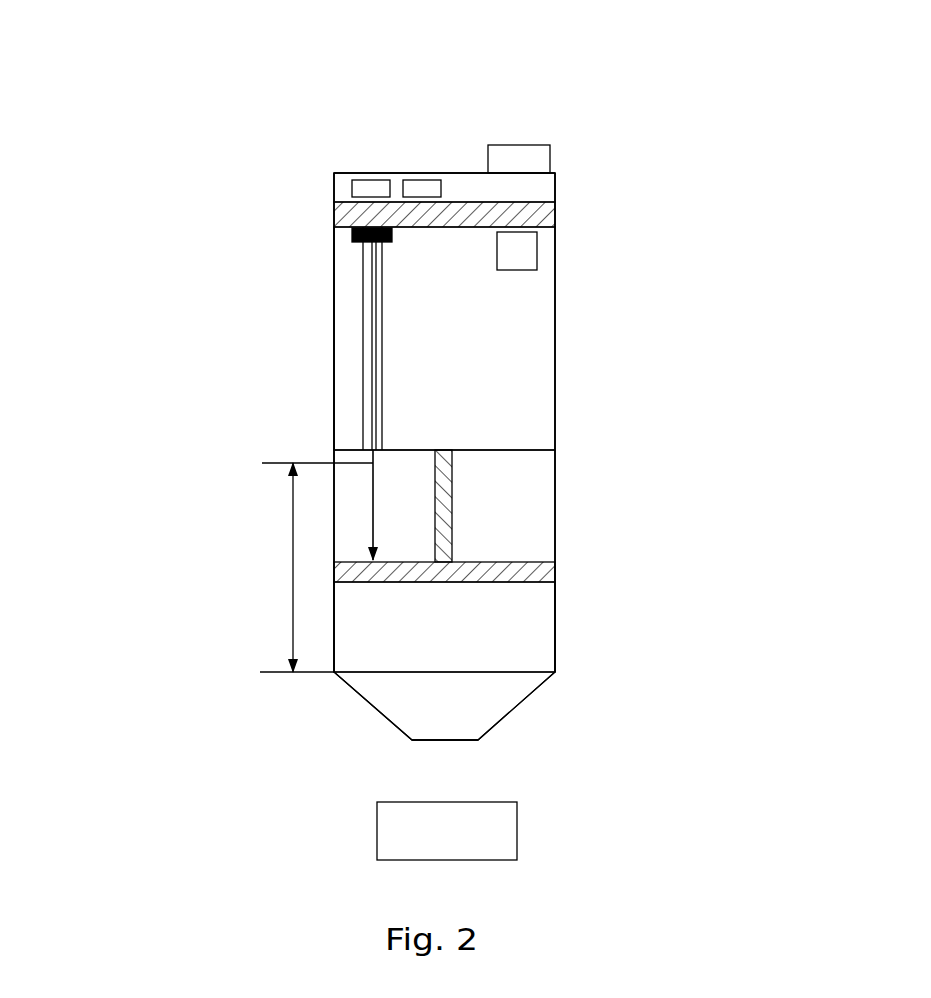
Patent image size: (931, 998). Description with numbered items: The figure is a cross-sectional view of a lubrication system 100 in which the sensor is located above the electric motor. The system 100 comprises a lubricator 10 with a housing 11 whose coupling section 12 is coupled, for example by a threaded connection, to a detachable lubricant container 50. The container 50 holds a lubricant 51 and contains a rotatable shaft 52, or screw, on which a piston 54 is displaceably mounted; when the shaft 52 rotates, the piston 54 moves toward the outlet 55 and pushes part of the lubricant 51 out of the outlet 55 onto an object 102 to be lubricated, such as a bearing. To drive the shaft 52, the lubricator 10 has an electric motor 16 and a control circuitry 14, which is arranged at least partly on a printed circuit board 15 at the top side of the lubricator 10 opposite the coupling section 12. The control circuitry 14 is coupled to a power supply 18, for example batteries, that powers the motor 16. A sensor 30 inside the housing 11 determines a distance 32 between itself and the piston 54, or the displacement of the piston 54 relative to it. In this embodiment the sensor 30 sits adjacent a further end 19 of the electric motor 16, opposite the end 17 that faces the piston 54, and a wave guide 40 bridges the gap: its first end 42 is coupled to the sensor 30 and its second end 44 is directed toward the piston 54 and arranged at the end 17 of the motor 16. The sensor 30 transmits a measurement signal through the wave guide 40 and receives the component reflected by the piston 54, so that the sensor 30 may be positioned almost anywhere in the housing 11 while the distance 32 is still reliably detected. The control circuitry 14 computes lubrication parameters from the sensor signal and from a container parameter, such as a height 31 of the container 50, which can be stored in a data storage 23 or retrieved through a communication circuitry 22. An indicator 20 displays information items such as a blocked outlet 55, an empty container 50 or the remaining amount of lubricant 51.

The lubricator 10 is at (233, 112).
The lubrication system 100 is at (628, 130).
The housing 11 is at (557, 373).
The coupling section 12 is at (558, 438).
The control circuitry 14 is at (557, 190).
The printed circuit board 15 is at (557, 212).
The electric motor 16 is at (527, 300).
The end of the electric motor 17 is at (333, 440).
The power supply 18 is at (540, 248).
The further end of the electric motor 19 is at (332, 224).
The indicator 20 is at (526, 135).
The communication circuitry 22 is at (370, 178).
The data storage 23 is at (420, 178).
The sensor 30 is at (355, 212).
The height of the lubricant container 31 is at (290, 628).
The distance 32 is at (363, 497).
The wave guide 40 is at (363, 337).
The first end of the wave guide 42 is at (352, 243).
The second end of the wave guide 44 is at (362, 437).
The lubricant container 50 is at (563, 665).
The lubricant 51 is at (530, 610).
The rotatable shaft 52 is at (456, 500).
The piston 54 is at (548, 570).
The outlet 55 is at (452, 745).
The object 102 is at (527, 826).